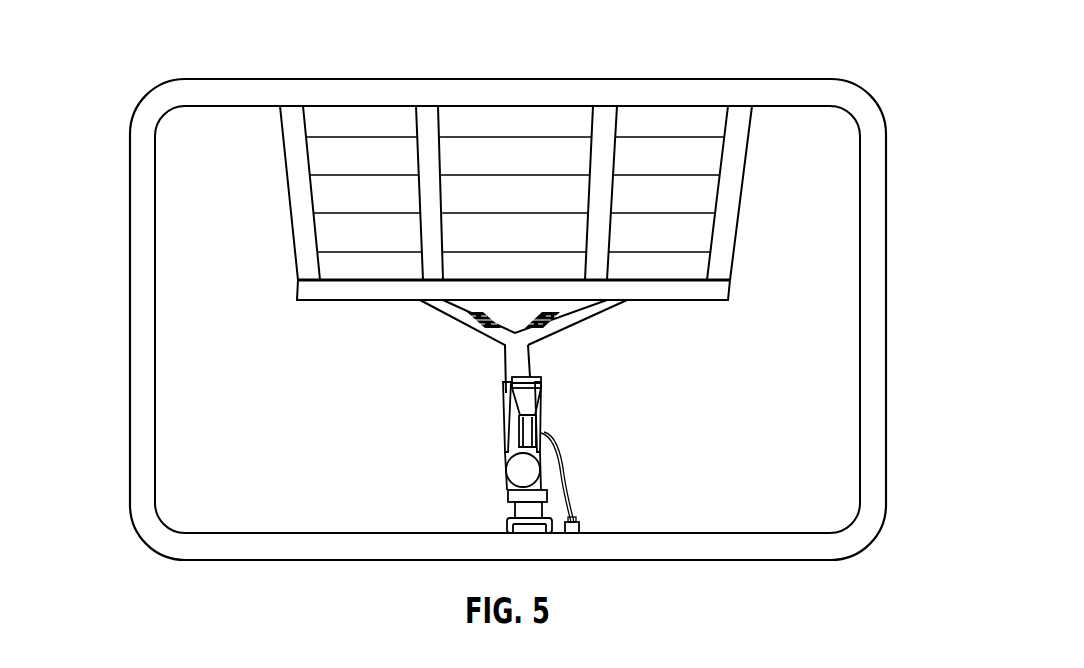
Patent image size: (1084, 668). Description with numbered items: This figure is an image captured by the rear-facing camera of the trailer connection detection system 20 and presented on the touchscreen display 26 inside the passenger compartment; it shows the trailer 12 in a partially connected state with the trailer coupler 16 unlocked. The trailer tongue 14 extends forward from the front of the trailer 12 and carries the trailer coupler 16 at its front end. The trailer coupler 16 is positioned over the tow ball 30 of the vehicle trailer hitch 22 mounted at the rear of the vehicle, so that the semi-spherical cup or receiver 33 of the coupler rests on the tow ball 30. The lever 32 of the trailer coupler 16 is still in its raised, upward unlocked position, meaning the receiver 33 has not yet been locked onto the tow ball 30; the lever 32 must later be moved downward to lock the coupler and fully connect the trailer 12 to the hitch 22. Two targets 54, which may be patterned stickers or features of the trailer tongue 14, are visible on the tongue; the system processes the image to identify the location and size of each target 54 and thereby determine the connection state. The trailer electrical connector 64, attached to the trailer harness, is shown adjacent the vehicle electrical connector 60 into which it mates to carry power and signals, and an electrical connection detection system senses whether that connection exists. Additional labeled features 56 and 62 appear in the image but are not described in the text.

The trailer 12 is at (768, 187).
The trailer tongue 14 is at (515, 365).
The trailer coupler 16 is at (541, 417).
The trailer connection detection system 20 is at (478, 397).
The vehicle trailer hitch 22 is at (527, 512).
The touchscreen display 26 is at (772, 80).
The tow ball 30 is at (515, 470).
The lever 32 is at (530, 388).
The receiver 33 is at (543, 467).
The targets 54 is at (546, 312).
The frame inner wall 56 is at (155, 262).
The vehicle electrical connector 60 is at (572, 533).
The ball joint 62 is at (560, 448).
The trailer electrical connector 64 is at (578, 521).